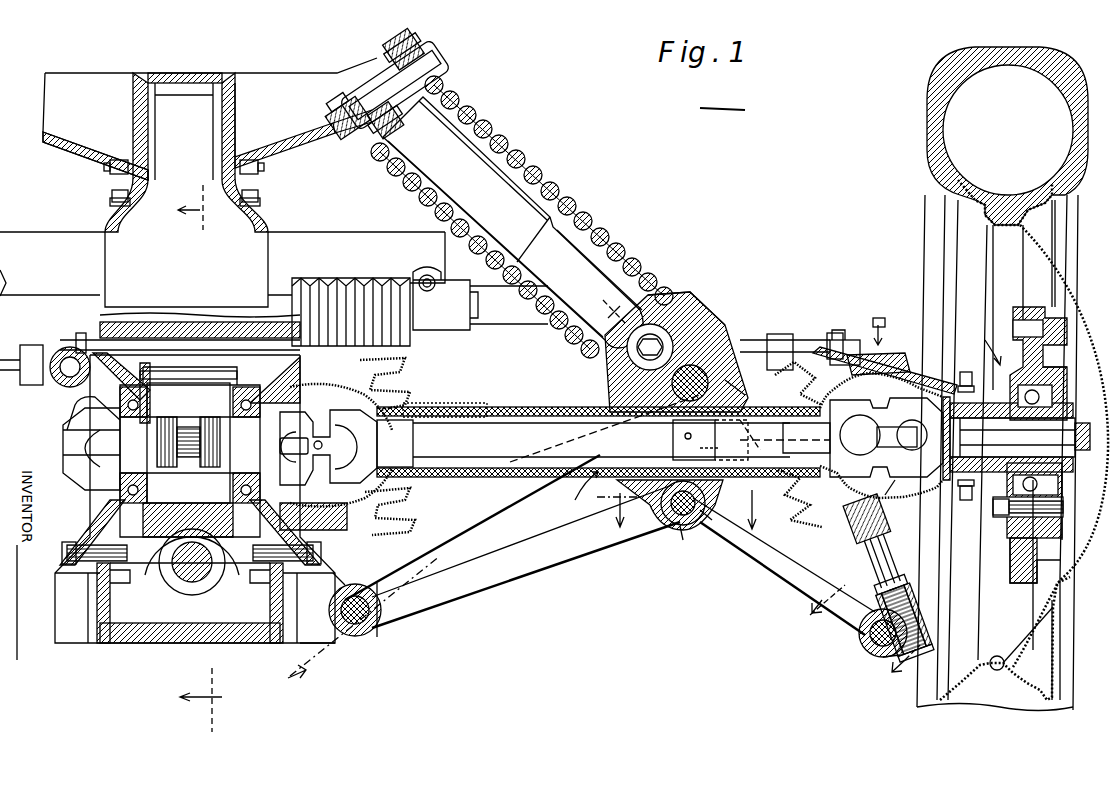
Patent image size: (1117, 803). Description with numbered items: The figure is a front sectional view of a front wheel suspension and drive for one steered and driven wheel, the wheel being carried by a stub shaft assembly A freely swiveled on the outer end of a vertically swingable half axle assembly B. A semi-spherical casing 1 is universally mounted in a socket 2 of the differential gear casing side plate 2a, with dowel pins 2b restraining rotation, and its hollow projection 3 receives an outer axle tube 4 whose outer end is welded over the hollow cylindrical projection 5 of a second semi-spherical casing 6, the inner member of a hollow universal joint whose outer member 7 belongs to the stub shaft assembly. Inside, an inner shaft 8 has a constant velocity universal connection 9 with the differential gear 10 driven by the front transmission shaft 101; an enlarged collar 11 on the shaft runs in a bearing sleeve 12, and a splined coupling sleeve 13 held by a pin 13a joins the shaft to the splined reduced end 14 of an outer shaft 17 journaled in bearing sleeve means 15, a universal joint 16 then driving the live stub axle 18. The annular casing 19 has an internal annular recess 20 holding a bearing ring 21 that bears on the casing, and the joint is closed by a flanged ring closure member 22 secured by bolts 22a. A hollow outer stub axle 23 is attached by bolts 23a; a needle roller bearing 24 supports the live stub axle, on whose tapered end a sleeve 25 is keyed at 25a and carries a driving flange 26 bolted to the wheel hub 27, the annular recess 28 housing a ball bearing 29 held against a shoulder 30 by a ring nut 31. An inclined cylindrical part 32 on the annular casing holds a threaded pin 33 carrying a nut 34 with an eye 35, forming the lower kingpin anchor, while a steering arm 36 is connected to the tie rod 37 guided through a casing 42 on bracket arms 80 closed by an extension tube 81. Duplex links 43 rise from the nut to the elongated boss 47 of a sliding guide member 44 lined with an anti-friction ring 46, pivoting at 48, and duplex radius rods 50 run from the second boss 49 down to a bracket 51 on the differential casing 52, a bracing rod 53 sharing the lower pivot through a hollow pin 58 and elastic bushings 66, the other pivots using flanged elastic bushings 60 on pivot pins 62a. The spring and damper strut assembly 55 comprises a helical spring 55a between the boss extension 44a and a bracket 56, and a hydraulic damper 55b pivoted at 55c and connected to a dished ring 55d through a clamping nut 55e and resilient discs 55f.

The semi-spherical casing 1 is at (360, 490).
The socket 2 is at (378, 508).
The differential gear casing side plate 2a is at (368, 535).
The dowel pins 2b is at (324, 445).
The hollow projection 3 is at (445, 485).
The outer axle tube 4 is at (520, 480).
The hollow cylindrical projection 5 is at (788, 480).
The semi-spherical casing 6 is at (838, 478).
The outer member 7 is at (534, 458).
The inner shaft 8 is at (522, 420).
The universal connection 9 is at (326, 414).
The differential gear 10 is at (267, 414).
The enlarged collar 11 is at (414, 444).
The bearing sleeve 12 is at (402, 400).
The coupling sleeve 13 is at (698, 440).
The pin 13a is at (700, 431).
The splined and reduced end 14 is at (704, 447).
The bearing sleeve means 15 is at (885, 437).
The universal joint 16 is at (884, 406).
The outer shaft 17 is at (818, 445).
The live stub axle 18 is at (1062, 430).
The annular casing 19 is at (930, 385).
The internal annular recess 20 is at (886, 485).
The bearing ring 21 is at (940, 470).
The flanged ring closure member 22 is at (862, 505).
The bolts 22a is at (885, 355).
The outer stub axle 23 is at (976, 395).
The bolts 23a is at (966, 380).
The needle roller bearing 24 is at (958, 437).
The sleeve 25 is at (1040, 430).
The key 25a is at (1017, 447).
The driving flange 26 is at (1058, 492).
The wheel hub 27 is at (1035, 522).
The annular recess 28 is at (1050, 398).
The ball bearing 29 is at (1050, 368).
The shoulder 30 is at (1017, 433).
The ring nut 31 is at (1055, 480).
The cylindrical part 32 is at (876, 550).
The pin 33 is at (882, 565).
The nut 34 is at (938, 620).
The eye 35 is at (886, 658).
The steering arm 36 is at (848, 343).
The tie rod 37 is at (12, 360).
The casing 42 is at (425, 330).
The duplex links 43 is at (784, 566).
The guide member 44 is at (775, 478).
The boss extension 44a is at (682, 308).
The ring 46 is at (770, 390).
The elongated boss 47 is at (683, 519).
The pivotal connection 48 is at (671, 534).
The second boss 49 is at (733, 381).
The duplex radius rods 50 is at (496, 540).
The bracket 51 is at (345, 645).
The differential casing 52 is at (203, 643).
The bracing rod 53 is at (566, 555).
The spring and damper strut assembly 55 is at (530, 216).
The helical spring 55a is at (595, 215).
The hydraulic damper 55b is at (518, 152).
The pivot 55c is at (686, 316).
The dished ring 55d is at (428, 68).
The clamping nut 55e is at (372, 70).
The resilient discs 55f is at (348, 98).
The bracket 56 is at (295, 140).
The hollow pin 58 is at (713, 520).
The flanged elastic bushings 60 is at (362, 618).
The pivot pins 62a is at (696, 370).
The elastic bushings 66 is at (665, 505).
The bracket arms 80 is at (365, 232).
The extension tube 81 is at (495, 293).
The front transmission shaft 101 is at (205, 575).
The stub shaft assembly A is at (1040, 446).
The half axle assembly B is at (574, 494).